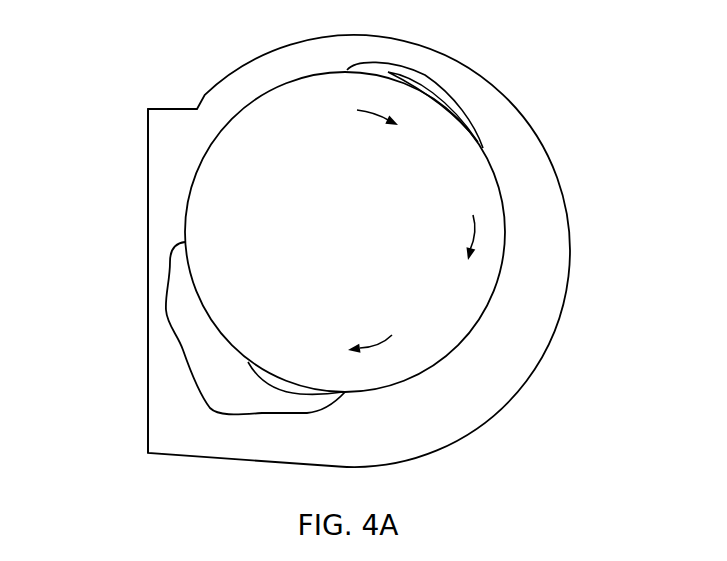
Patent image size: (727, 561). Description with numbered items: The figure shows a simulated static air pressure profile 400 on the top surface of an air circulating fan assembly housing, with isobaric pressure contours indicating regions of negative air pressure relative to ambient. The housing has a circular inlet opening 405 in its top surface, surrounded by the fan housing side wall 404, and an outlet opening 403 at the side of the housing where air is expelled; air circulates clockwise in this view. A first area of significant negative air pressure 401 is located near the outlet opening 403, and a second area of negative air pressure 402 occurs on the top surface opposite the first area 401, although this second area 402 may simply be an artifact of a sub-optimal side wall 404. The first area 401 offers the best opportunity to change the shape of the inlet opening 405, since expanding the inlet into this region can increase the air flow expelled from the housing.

The static air pressure profile 400 is at (652, 87).
The first area of significant negative air pressure 401 is at (270, 395).
The second area of negative air pressure 402 is at (440, 98).
The outlet opening 403 is at (147, 395).
The fan housing side wall 404 is at (572, 252).
The circular inlet opening 405 is at (212, 143).